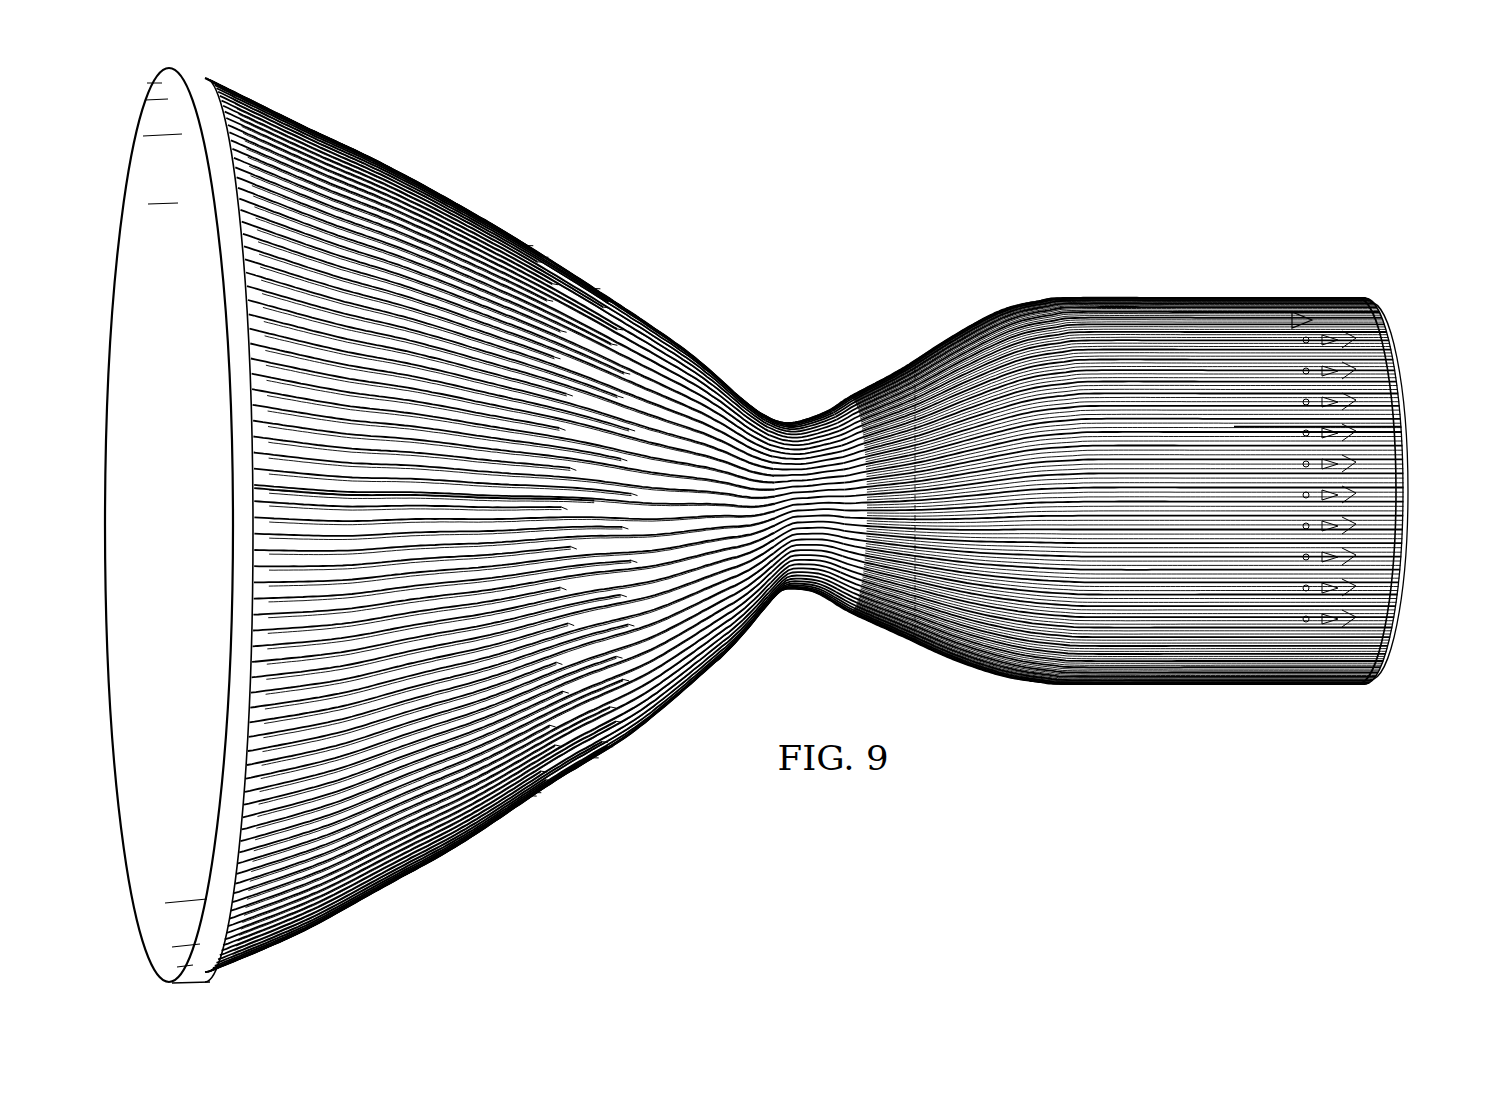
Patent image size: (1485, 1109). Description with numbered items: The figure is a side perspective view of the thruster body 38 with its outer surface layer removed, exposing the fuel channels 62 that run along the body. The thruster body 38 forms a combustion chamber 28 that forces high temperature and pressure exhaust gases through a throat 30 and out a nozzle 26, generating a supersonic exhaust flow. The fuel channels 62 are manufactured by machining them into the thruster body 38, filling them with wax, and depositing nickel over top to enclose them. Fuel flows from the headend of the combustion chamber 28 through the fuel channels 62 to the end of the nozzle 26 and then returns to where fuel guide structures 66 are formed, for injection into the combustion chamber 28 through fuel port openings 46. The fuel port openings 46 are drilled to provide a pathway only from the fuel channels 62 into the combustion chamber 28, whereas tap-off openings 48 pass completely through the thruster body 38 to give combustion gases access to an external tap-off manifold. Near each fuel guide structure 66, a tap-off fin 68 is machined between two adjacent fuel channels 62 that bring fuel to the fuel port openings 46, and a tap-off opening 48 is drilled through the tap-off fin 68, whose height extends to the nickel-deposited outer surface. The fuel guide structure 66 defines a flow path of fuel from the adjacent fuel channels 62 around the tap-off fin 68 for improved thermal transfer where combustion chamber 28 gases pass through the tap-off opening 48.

The nozzle 26 is at (457, 843).
The combustion chamber 28 is at (1138, 300).
The throat 30 is at (789, 590).
The thruster body 38 is at (797, 293).
The fuel port openings 46 is at (1330, 652).
The tap-off openings 48 is at (1312, 650).
The fuel channels 62 is at (316, 490).
The fuel guide structure 66 is at (1345, 392).
The tap-off fin 68 is at (1300, 318).